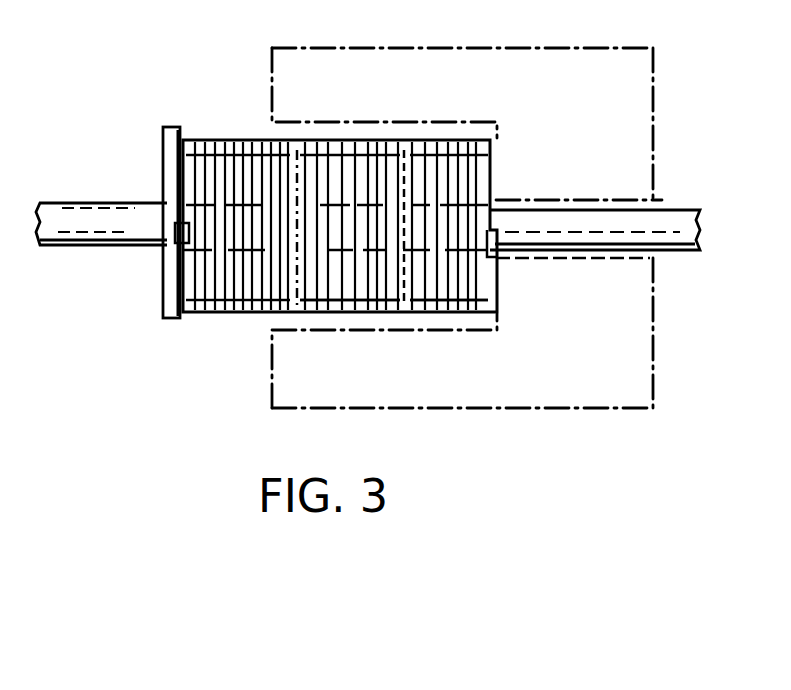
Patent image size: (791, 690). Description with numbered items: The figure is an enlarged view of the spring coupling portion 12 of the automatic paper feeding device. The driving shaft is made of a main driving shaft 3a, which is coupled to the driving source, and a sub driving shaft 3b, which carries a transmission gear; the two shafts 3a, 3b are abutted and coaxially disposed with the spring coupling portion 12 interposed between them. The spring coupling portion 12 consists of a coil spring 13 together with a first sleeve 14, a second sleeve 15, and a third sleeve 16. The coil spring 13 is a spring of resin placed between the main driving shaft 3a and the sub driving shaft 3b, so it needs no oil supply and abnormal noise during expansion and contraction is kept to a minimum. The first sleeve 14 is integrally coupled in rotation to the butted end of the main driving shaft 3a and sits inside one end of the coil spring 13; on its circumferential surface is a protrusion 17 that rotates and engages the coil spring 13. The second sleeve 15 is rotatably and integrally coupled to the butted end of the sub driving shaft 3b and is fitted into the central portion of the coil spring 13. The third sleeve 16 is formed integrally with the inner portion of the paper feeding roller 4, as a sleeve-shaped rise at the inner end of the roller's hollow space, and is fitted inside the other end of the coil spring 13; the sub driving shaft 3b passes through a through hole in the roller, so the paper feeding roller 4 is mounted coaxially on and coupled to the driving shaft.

The paper feeding roller 4 is at (457, 74).
The main driving shaft 3a is at (66, 250).
The sub driving shaft 3b is at (686, 253).
The spring coupling portion 12 is at (143, 311).
The coil spring 13 is at (205, 313).
The first sleeve 14 is at (205, 147).
The second sleeve 15 is at (325, 302).
The third sleeve 16 is at (437, 292).
The protrusion 17 is at (150, 249).